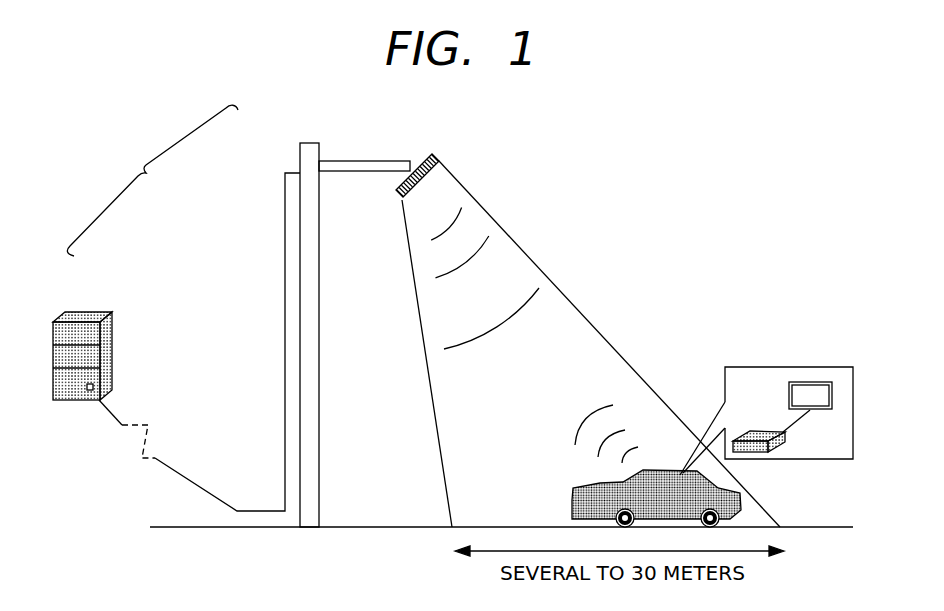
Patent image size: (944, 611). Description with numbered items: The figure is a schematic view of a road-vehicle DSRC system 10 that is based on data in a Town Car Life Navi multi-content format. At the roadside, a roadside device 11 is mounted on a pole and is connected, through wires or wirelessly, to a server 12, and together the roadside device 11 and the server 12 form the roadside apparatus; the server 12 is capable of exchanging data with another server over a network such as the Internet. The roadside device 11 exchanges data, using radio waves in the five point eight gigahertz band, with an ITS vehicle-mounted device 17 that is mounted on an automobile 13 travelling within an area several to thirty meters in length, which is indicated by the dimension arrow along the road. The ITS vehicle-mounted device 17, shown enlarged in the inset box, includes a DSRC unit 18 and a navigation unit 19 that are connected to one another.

The road-vehicle DSRC system 10 is at (607, 148).
The roadside device 11 is at (300, 160).
The server 12 is at (88, 310).
The automobile 13 is at (580, 488).
The ITS vehicle-mounted device 17 is at (782, 357).
The DSRC unit 18 is at (763, 428).
The navigation unit 19 is at (827, 411).